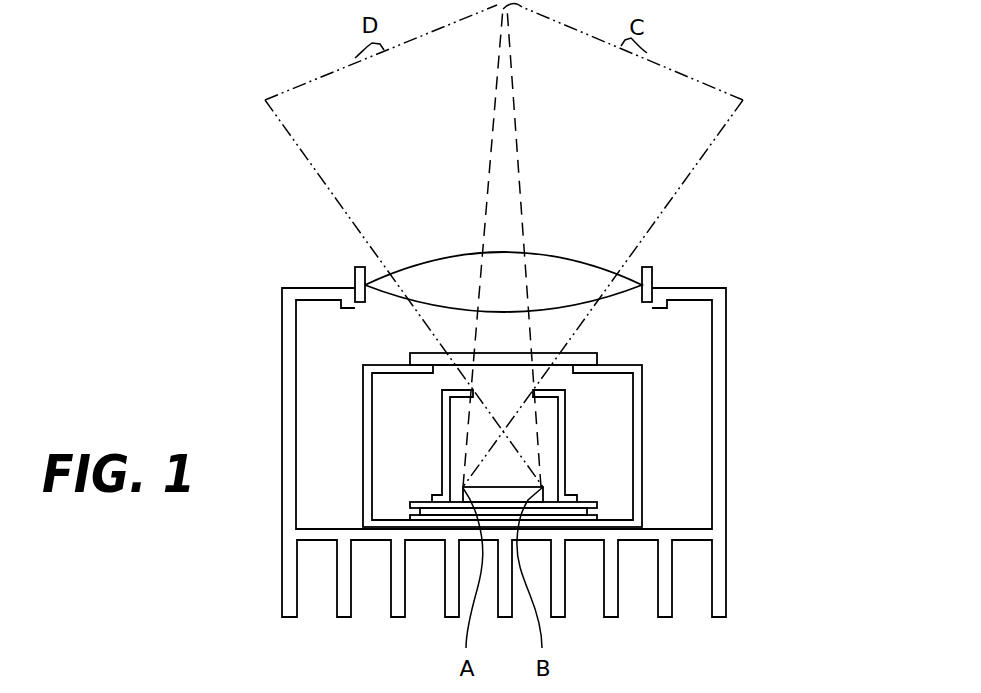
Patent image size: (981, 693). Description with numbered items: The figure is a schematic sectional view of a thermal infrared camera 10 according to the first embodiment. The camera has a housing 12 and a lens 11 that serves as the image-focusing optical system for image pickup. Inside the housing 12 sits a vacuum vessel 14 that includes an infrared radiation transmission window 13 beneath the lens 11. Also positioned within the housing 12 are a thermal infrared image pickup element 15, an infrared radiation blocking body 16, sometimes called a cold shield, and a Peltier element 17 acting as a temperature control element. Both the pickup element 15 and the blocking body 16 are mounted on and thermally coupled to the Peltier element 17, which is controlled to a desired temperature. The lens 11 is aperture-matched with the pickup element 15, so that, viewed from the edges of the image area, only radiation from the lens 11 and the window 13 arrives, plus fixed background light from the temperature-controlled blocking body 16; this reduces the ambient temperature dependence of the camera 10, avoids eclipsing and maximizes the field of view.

The thermal infrared camera 10 is at (737, 224).
The lens 11 is at (378, 278).
The housing 12 is at (722, 435).
The infrared radiation transmission window 13 is at (412, 360).
The vacuum vessel 14 is at (642, 413).
The thermal infrared image pickup element 15 is at (524, 488).
The infrared radiation blocking body 16 is at (567, 403).
The Peltier element 17 is at (587, 510).